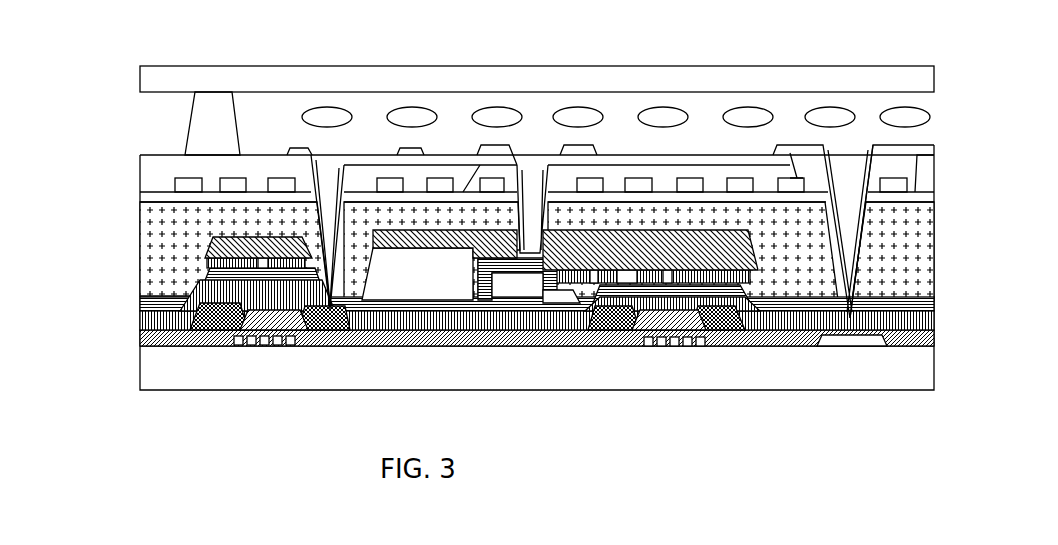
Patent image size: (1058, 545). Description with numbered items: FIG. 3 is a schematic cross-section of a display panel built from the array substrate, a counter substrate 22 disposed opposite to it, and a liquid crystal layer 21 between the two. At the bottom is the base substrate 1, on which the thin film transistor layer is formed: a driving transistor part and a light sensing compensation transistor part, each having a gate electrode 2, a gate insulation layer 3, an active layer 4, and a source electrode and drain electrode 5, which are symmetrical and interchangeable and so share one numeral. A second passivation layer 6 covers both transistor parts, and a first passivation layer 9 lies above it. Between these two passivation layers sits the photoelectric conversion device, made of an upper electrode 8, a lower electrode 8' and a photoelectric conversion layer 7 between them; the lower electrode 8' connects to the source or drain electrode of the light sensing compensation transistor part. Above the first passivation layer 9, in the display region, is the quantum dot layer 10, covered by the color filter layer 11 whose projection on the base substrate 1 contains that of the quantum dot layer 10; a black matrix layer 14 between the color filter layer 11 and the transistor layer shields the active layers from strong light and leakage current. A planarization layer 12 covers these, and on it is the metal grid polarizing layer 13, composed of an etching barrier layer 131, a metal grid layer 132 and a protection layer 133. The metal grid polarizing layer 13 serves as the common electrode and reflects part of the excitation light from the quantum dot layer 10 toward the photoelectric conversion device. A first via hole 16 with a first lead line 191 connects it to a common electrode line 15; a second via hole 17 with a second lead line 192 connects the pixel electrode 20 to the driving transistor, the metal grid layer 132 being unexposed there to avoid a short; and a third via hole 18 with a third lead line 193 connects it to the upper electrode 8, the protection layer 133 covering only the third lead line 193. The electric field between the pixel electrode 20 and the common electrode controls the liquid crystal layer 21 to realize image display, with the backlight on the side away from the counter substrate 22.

The base substrate 1 is at (150, 373).
The gate electrode 2 is at (273, 343).
The gate insulation layer 3 is at (150, 337).
The active layer 4 is at (250, 317).
The source electrode and drain electrode 5 is at (202, 330).
The second passivation layer 6 is at (150, 321).
The photoelectric conversion layer 7 is at (520, 292).
The upper electrode 8 is at (517, 351).
The lower electrode 8' is at (551, 367).
The first passivation layer 9 is at (150, 298).
The quantum dot layer 10 is at (417, 290).
The color filter layer 11 is at (215, 242).
The planarization layer 12 is at (153, 212).
The metal grid polarizing layer 13 is at (475, 165).
The etching barrier layer 131 is at (153, 197).
The metal grid layer 132 is at (183, 182).
The protection layer 133 is at (153, 160).
The black matrix layer 14 is at (217, 259).
The common electrode line 15 is at (868, 346).
The first via hole 16 is at (865, 140).
The second via hole 17 is at (331, 140).
The third via hole 18 is at (533, 140).
The first lead line 191 is at (805, 152).
The second lead line 192 is at (301, 150).
The third lead line 193 is at (480, 173).
The pixel electrode 20 is at (421, 150).
The liquid crystal layer 21 is at (750, 110).
The counter substrate 22 is at (152, 78).